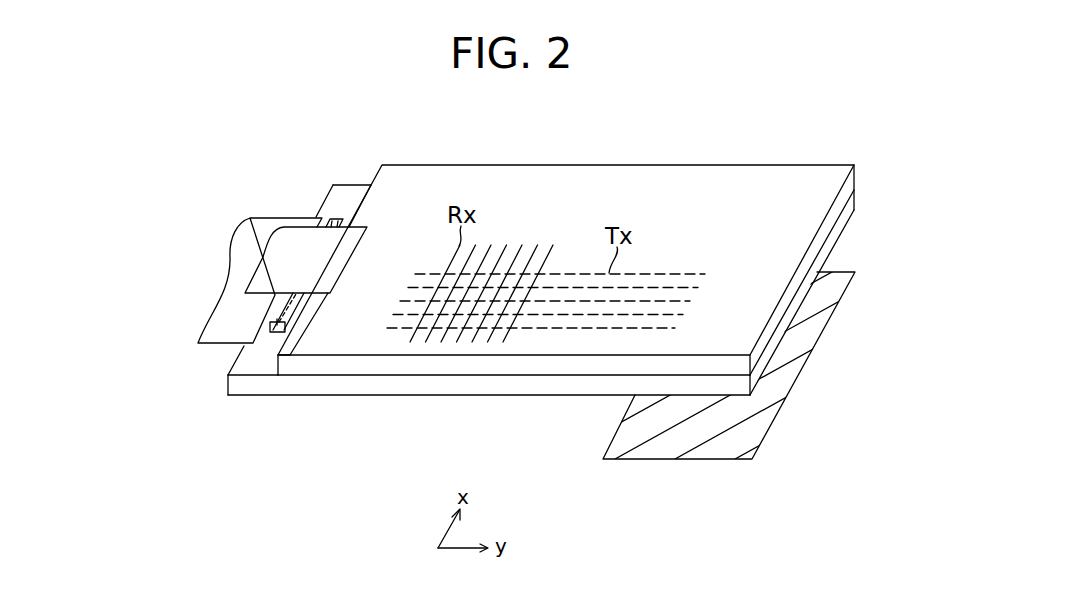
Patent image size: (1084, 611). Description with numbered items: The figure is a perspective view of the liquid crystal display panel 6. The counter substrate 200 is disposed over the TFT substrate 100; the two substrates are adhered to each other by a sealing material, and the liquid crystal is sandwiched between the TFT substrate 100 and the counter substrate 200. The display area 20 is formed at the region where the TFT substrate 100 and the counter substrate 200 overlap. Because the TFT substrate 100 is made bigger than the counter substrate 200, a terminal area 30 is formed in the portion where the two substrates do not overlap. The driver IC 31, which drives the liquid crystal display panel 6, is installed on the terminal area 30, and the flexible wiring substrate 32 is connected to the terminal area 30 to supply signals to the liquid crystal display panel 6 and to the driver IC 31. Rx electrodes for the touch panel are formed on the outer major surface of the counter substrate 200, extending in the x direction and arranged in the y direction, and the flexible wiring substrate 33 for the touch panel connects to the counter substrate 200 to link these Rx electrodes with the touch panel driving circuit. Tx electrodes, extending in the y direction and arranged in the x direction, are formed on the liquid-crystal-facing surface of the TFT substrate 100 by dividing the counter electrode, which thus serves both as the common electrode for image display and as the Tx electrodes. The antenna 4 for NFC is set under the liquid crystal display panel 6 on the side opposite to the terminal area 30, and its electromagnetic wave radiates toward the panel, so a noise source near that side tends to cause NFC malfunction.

The antenna 4 is at (664, 459).
The liquid crystal display panel 6 is at (578, 436).
The display area 20 is at (582, 218).
The terminal area 30 is at (249, 363).
The driver IC 31 is at (275, 328).
The flexible wiring substrate 32 is at (248, 236).
The flexible wiring substrate for the touch panel 33 is at (278, 270).
The TFT substrate 100 is at (542, 387).
The counter substrate 200 is at (459, 365).